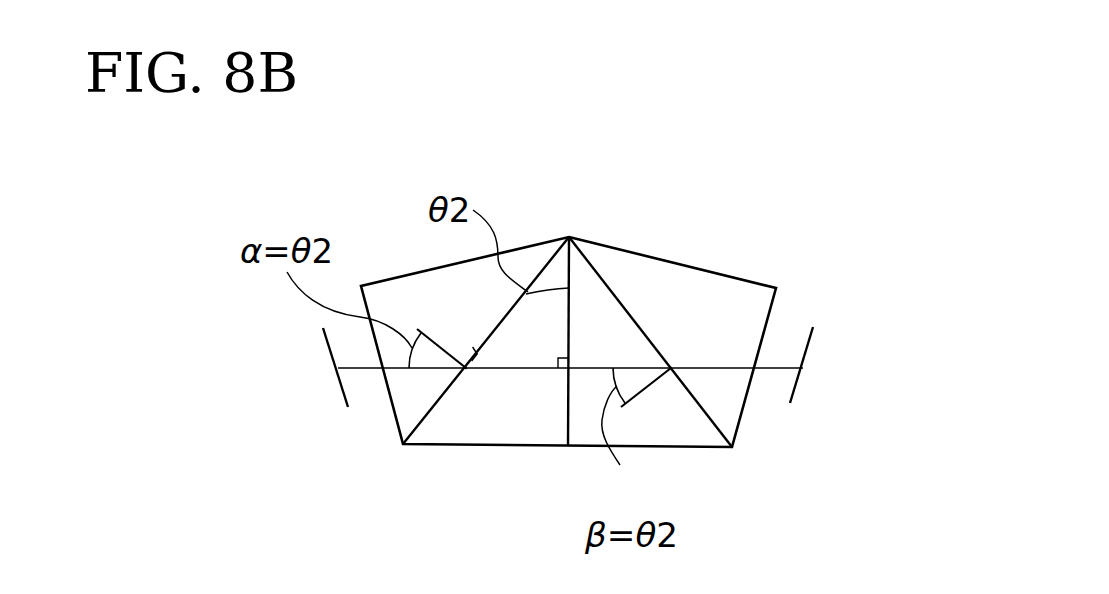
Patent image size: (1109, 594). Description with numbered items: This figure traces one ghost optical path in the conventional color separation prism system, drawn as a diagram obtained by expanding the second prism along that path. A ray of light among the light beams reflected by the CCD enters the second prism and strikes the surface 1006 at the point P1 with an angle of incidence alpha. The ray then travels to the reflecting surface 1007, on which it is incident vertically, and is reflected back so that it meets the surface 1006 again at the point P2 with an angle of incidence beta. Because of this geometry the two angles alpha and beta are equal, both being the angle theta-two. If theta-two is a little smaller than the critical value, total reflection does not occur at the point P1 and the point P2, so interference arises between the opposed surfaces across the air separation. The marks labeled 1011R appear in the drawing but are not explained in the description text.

The reflecting surface 1007 is at (593, 243).
The surface 1006 is at (433, 405).
The aperture stop 1011R is at (327, 352).
The point P1 is at (466, 368).
The point P2 is at (671, 368).